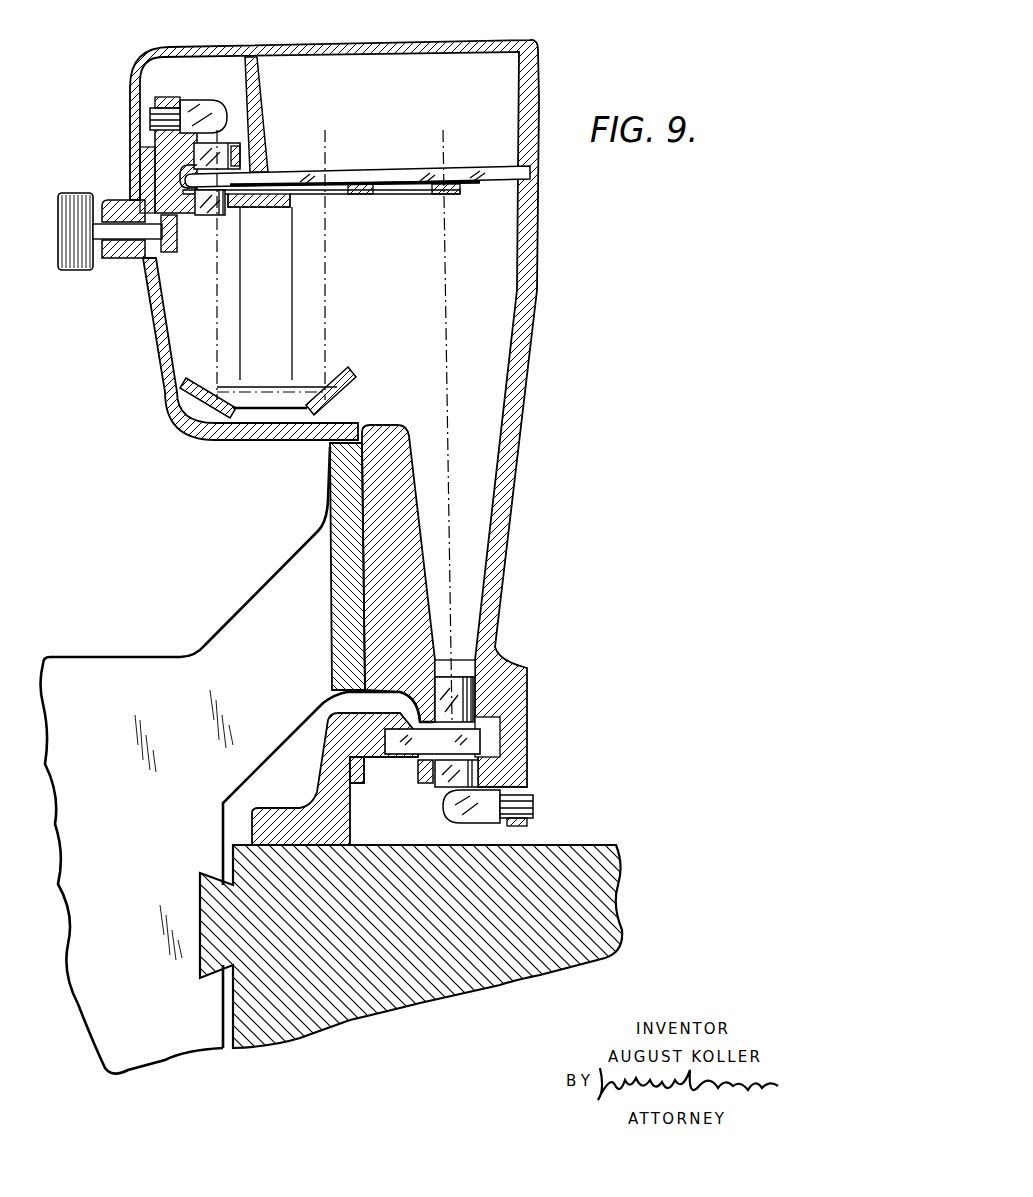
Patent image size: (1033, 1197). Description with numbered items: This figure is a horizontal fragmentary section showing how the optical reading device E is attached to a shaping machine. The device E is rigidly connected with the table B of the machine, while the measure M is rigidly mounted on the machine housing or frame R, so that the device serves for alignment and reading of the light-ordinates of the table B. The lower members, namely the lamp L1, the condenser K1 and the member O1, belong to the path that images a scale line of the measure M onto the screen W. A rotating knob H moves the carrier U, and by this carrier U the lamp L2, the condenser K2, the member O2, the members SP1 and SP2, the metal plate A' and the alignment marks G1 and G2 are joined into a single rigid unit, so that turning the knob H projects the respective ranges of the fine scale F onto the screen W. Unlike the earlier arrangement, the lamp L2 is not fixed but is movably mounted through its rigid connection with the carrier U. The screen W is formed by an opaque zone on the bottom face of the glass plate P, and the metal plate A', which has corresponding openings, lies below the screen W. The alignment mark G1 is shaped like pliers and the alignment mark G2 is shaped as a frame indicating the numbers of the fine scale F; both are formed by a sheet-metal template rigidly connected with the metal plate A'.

The device E is at (522, 368).
The table B is at (119, 662).
The housing R is at (212, 912).
The measure M is at (417, 756).
The member O1 is at (468, 700).
The condenser K1 is at (472, 768).
The lamp L1 is at (527, 807).
The rotating knob H is at (58, 234).
The carrier U is at (155, 150).
The lamp L2 is at (197, 115).
The condenser K2 is at (240, 152).
The glass plate P is at (466, 170).
The fine scale F is at (185, 179).
The screen W is at (378, 182).
The metal plate A' is at (321, 219).
The member O2 is at (222, 214).
The alignment mark G2 is at (355, 195).
The alignment mark G1 is at (462, 195).
The member SP1 is at (196, 383).
The member SP2 is at (349, 374).